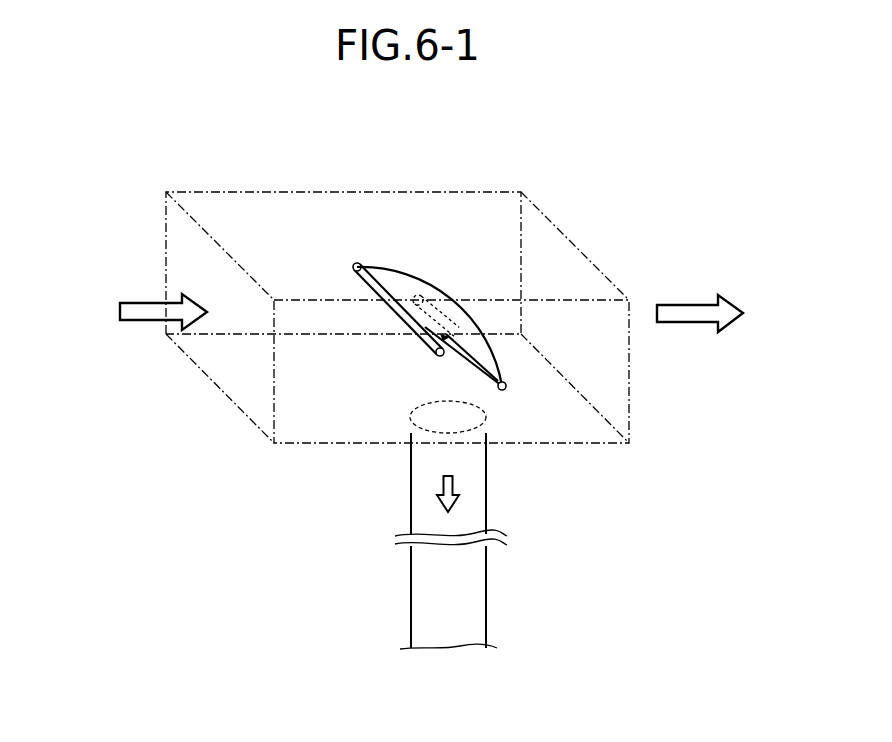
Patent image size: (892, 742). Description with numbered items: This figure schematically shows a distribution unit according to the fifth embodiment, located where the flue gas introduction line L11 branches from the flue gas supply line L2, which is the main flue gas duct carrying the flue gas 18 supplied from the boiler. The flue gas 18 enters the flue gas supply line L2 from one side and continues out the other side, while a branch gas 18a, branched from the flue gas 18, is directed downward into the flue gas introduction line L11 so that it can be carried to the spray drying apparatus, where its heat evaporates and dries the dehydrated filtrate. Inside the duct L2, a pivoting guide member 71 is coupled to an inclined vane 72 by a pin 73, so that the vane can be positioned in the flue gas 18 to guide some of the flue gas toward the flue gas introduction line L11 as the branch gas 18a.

The flue gas 18 is at (133, 303).
The branch gas 18a is at (452, 486).
The link bar 71 is at (357, 262).
The valve blade 72 is at (503, 390).
The pivot pin 73 is at (428, 288).
The flue gas supply line L2 is at (242, 192).
The flue gas introduction line L11 is at (487, 582).